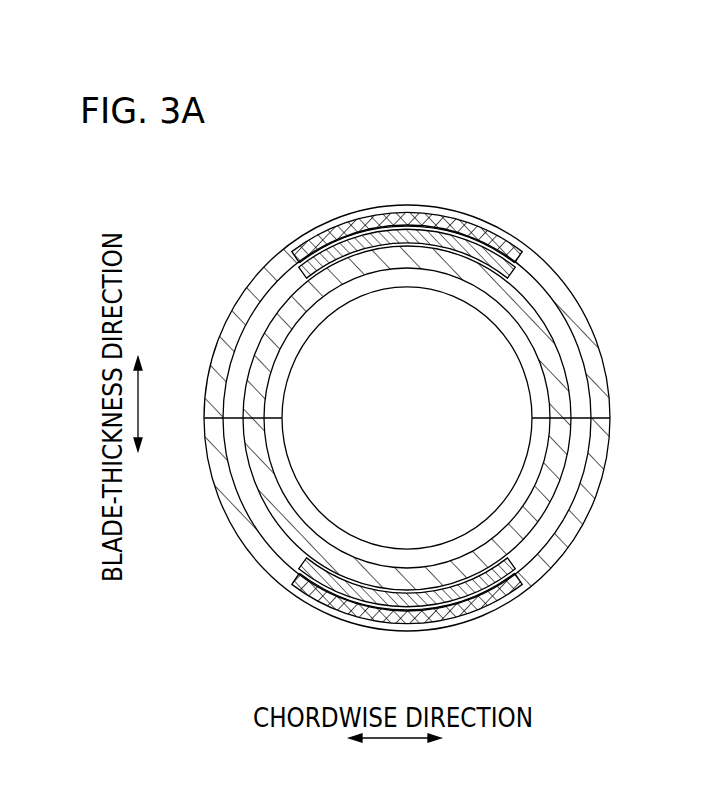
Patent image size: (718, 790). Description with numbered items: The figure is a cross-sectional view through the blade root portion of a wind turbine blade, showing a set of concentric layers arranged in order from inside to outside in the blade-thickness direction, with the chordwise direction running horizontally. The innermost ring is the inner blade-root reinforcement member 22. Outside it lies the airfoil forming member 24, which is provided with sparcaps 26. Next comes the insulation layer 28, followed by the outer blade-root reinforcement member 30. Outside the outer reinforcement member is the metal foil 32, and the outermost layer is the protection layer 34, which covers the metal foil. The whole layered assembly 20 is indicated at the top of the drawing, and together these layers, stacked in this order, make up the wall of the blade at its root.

The blade 20 is at (453, 80).
The inner blade-root reinforcement member 22 is at (530, 360).
The airfoil forming member 24 is at (262, 287).
The sparcaps 26 is at (487, 232).
The insulation layer 28 is at (340, 247).
The outer blade-root reinforcement member 30 is at (580, 392).
The metal foil 32 is at (430, 205).
The protection layer 34 is at (379, 207).